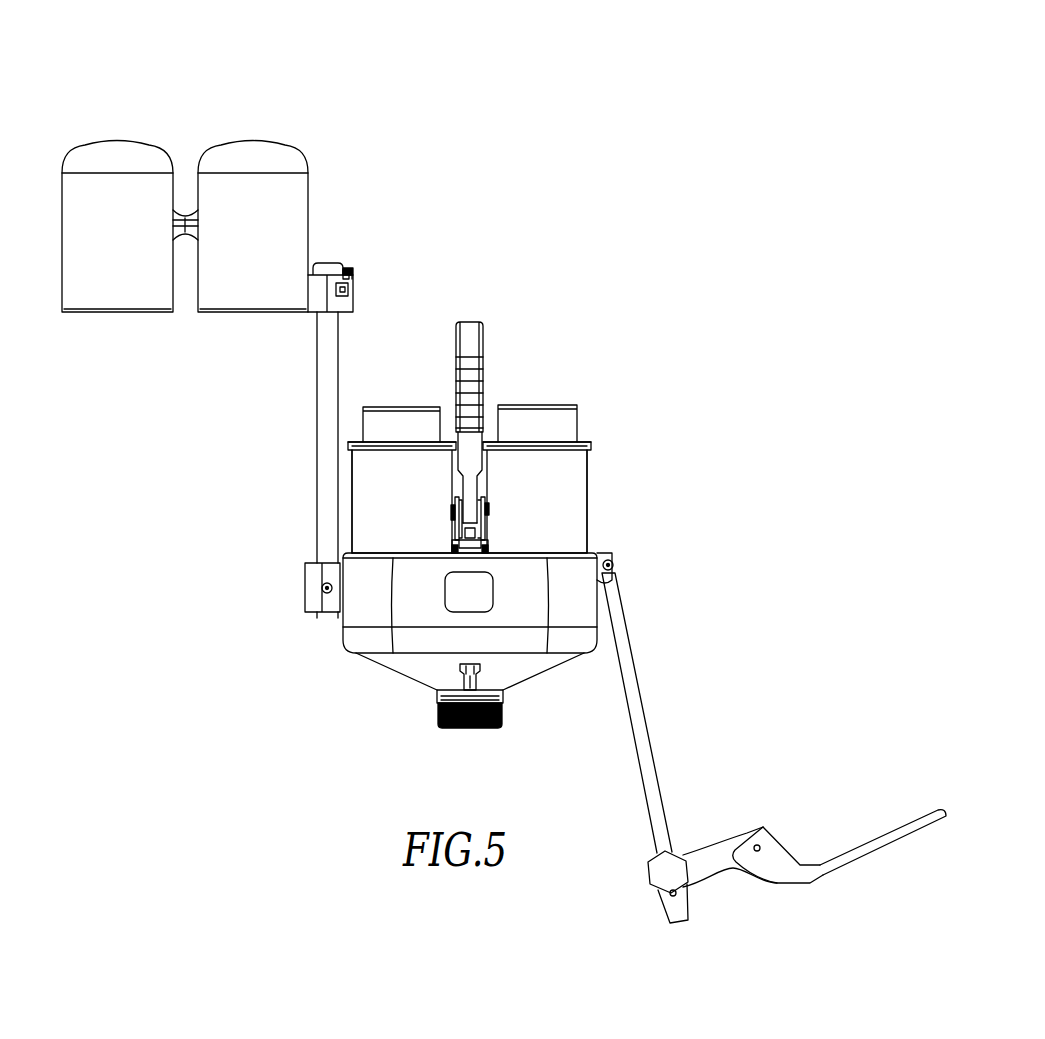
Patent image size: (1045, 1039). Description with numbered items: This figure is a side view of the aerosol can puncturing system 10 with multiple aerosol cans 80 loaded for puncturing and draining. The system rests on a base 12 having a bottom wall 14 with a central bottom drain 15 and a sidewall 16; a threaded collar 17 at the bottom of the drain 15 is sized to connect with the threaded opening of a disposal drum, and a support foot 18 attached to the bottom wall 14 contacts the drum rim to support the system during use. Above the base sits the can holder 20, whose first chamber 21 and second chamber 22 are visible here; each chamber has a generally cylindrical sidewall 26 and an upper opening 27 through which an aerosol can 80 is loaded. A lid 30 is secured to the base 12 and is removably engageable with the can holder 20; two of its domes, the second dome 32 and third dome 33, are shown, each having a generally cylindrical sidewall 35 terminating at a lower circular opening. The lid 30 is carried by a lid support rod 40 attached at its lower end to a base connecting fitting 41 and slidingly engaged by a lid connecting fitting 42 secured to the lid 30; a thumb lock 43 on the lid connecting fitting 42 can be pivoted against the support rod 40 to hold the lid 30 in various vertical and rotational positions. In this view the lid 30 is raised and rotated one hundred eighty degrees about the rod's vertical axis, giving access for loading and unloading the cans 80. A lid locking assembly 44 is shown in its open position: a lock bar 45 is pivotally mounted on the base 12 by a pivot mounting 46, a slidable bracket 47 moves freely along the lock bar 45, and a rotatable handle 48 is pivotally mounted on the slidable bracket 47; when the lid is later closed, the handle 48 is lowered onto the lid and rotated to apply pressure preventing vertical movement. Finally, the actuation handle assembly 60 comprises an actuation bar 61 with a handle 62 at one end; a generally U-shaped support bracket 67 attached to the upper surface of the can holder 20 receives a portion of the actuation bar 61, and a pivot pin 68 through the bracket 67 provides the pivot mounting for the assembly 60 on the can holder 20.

The aerosol can puncturing system 10 is at (287, 78).
The base 12 is at (370, 637).
The bottom wall 14 is at (396, 674).
The central bottom drain 15 is at (503, 695).
The sidewall 16 is at (345, 627).
The threaded collar 17 is at (480, 729).
The support foot 18 is at (446, 696).
The can holder 20 is at (573, 472).
The first chamber 21 is at (415, 511).
The second chamber 22 is at (567, 511).
The cylindrical sidewall 26 is at (352, 476).
The upper opening 27 is at (358, 442).
The lid 30 is at (298, 178).
The second dome 32 is at (131, 240).
The third dome 33 is at (267, 240).
The cylindrical sidewall 35 is at (62, 210).
The lid support rod 40 is at (317, 368).
The base connecting fitting 41 is at (311, 584).
The lid connecting fitting 42 is at (320, 290).
The thumb lock 43 is at (352, 290).
The lid locking assembly 44 is at (640, 722).
The lock bar 45 is at (620, 633).
The pivot mounting 46 is at (613, 562).
The slidable bracket 47 is at (708, 878).
The rotatable handle 48 is at (878, 840).
The actuation handle assembly 60 is at (485, 358).
The actuation bar 61 is at (463, 458).
The handle 62 is at (468, 322).
The support bracket 67 is at (485, 522).
The pivot pin 68 is at (487, 510).
The aerosol can 80 is at (415, 415).